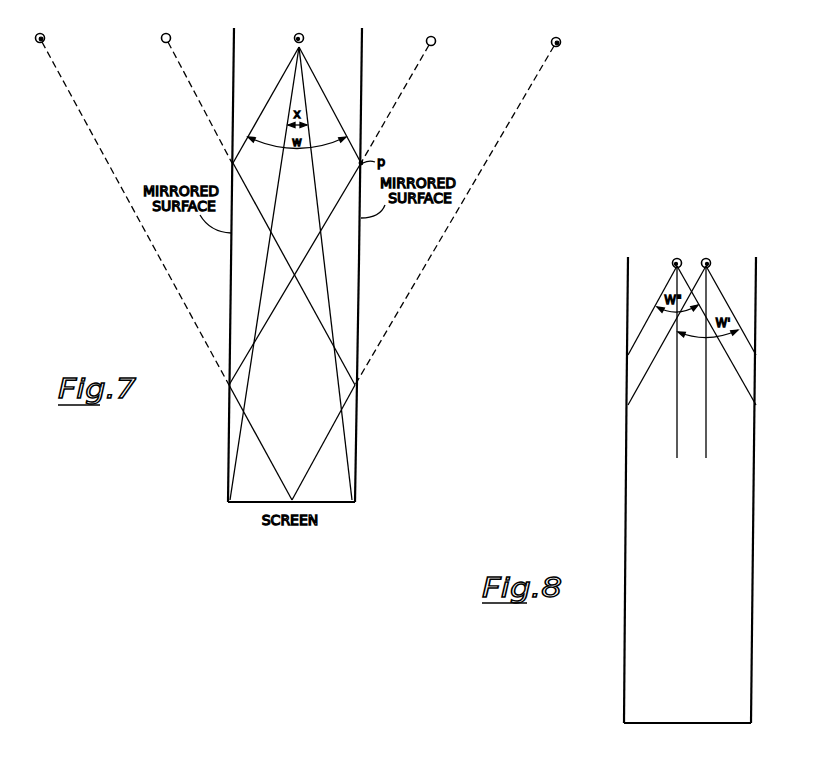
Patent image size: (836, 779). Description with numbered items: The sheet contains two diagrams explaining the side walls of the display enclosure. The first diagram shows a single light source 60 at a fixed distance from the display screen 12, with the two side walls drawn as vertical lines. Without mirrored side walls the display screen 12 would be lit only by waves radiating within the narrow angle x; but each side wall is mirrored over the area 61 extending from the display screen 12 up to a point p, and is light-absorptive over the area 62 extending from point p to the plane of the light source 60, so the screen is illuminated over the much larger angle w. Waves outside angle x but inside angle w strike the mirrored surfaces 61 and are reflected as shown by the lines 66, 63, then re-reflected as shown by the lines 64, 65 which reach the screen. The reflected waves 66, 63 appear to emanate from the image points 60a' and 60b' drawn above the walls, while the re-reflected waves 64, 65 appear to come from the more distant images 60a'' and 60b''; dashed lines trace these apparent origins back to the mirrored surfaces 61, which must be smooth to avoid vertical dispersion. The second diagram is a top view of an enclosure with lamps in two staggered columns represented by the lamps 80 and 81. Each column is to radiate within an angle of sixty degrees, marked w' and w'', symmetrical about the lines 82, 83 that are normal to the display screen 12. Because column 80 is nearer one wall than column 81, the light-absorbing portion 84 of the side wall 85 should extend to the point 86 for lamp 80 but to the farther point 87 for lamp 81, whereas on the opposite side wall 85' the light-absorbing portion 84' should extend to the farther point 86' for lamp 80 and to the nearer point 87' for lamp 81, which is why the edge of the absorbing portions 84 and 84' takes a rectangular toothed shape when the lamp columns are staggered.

In FIG. 7, the light source 60 is at (306, 26).
In FIG. 7, the image point 60a' is at (406, 88).
In FIG. 7, the image 60a'' is at (126, 198).
In FIG. 7, the image point 60b' is at (191, 87).
In FIG. 7, the image 60b'' is at (467, 199).
In FIG. 7, the mirrored surface 61 is at (359, 266).
In FIG. 7, the light-absorptive area 62 is at (362, 100).
In FIG. 7, the reflected light wave line 63 is at (257, 205).
In FIG. 7, the re-reflected light wave line 64 is at (258, 437).
In FIG. 7, the re-reflected light wave line 65 is at (322, 446).
In FIG. 7, the reflected light wave line 66 is at (338, 202).
In FIG. 8, the lamp column 80 is at (709, 259).
In FIG. 8, the lamp column 81 is at (679, 259).
In FIG. 8, the line normal to display screen 82 is at (707, 433).
In FIG. 8, the line normal to display screen 83 is at (678, 412).
In FIG. 8, the light-absorbing portion 84 is at (771, 328).
In FIG. 8, the light-absorbing portion 84' is at (610, 328).
In FIG. 8, the side wall 85 is at (766, 561).
In FIG. 8, the side wall 85' is at (610, 561).
In FIG. 8, the point 86 is at (744, 315).
In FIG. 8, the point 86' is at (651, 341).
In FIG. 8, the point 87 is at (729, 340).
In FIG. 8, the point 87' is at (636, 316).
In FIG. 8, the display screen 12 is at (741, 724).